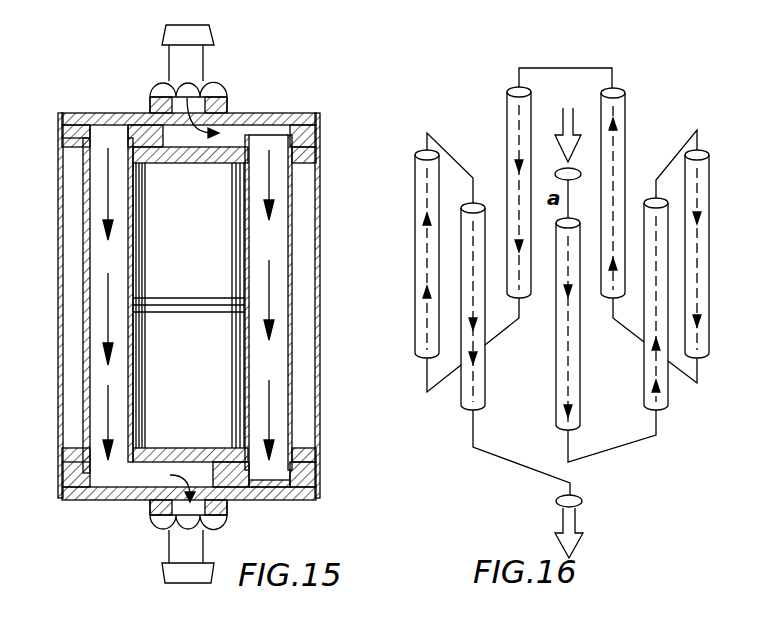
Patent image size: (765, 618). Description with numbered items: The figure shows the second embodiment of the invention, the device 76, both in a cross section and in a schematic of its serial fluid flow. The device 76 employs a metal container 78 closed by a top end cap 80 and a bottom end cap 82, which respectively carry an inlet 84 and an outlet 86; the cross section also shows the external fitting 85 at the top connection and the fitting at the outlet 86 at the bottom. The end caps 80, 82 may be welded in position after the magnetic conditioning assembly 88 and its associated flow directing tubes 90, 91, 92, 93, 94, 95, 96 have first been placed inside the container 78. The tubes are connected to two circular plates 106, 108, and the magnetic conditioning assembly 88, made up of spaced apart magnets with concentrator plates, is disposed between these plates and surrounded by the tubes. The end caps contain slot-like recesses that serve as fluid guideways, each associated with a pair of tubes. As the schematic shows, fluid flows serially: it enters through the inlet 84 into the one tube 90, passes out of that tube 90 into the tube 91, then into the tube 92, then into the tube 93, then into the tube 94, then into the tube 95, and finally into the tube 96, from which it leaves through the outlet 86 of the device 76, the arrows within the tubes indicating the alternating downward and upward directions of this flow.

In FIG. 15, the device 76 is at (335, 440).
In FIG. 15, the metal container 78 is at (318, 253).
In FIG. 15, the top end cap 80 is at (270, 118).
In FIG. 15, the bottom end cap 82 is at (265, 492).
In FIG. 16, the inlet 84 is at (575, 168).
In FIG. 15, the inlet fitting 85 is at (193, 57).
In FIG. 15, the outlet 86 is at (183, 555).
In FIG. 16, the outlet 86 is at (599, 515).
In FIG. 15, the magnetic conditioning assembly 88 is at (246, 289).
In FIG. 15, the tube 90 is at (290, 372).
In FIG. 16, the tube 90 is at (565, 348).
In FIG. 16, the tube 91 is at (660, 395).
In FIG. 16, the tube 92 is at (698, 187).
In FIG. 16, the tube 93 is at (613, 110).
In FIG. 16, the tube 94 is at (537, 198).
In FIG. 16, the tube 95 is at (429, 248).
In FIG. 15, the tube 96 is at (88, 358).
In FIG. 16, the tube 96 is at (470, 387).
In FIG. 15, the circular plate 106 is at (197, 155).
In FIG. 15, the circular plate 108 is at (200, 455).